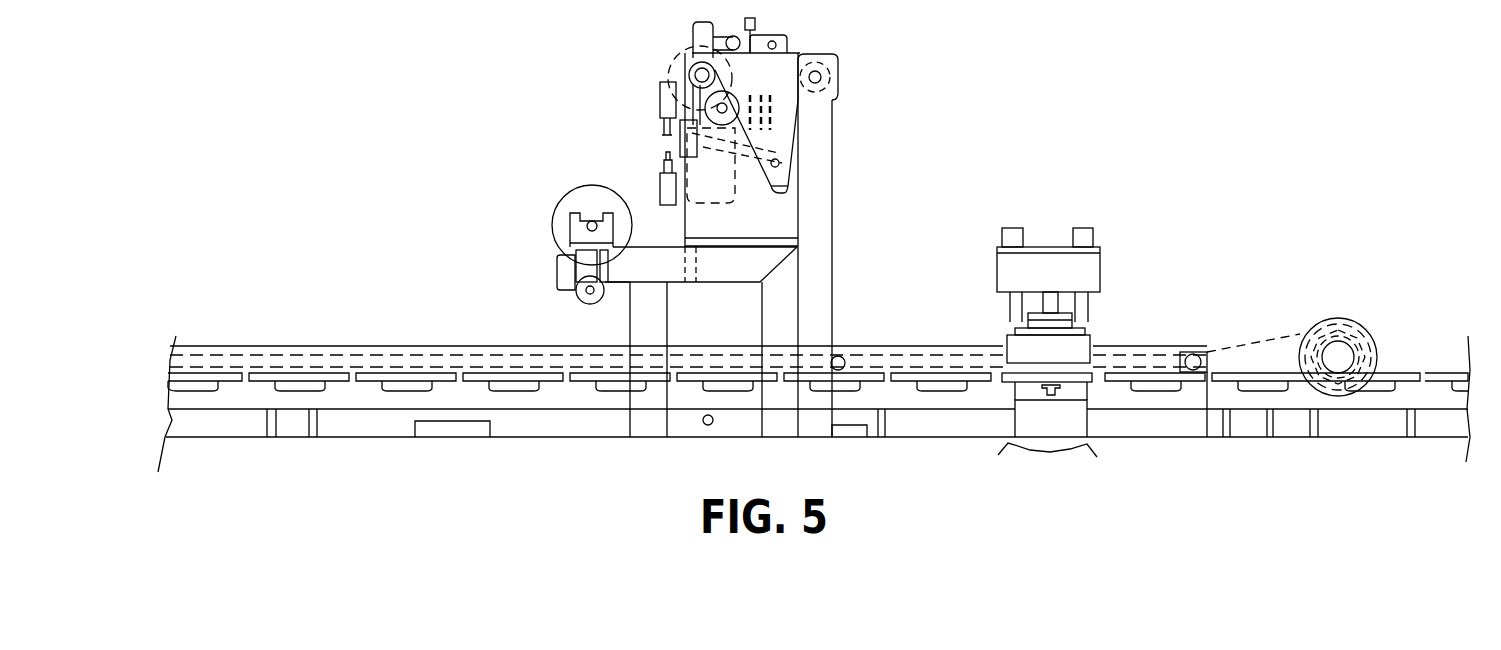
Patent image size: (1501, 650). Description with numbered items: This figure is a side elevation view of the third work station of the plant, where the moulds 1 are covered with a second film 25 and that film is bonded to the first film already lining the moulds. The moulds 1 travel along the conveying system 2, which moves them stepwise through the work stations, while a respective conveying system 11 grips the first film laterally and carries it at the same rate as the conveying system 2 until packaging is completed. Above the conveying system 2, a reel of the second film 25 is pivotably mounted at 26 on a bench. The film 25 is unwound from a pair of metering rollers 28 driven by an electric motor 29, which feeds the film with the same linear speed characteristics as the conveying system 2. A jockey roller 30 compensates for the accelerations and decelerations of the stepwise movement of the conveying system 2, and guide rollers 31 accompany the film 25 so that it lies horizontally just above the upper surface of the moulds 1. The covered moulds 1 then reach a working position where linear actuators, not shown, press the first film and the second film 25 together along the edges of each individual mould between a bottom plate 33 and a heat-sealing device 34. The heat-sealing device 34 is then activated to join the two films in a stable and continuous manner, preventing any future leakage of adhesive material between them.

The moulds 1 is at (517, 390).
The conveying system 2 is at (360, 427).
The conveying system 11 is at (317, 338).
The second film 25 is at (562, 222).
The pivotable mounting of reel 26 is at (592, 219).
The metering rollers 28 is at (694, 72).
The electric motor 29 is at (707, 190).
The jockey roller 30 is at (800, 170).
The guide rollers 31 is at (822, 60).
The bottom plate 33 is at (1058, 438).
The heat-sealing device 34 is at (1078, 355).